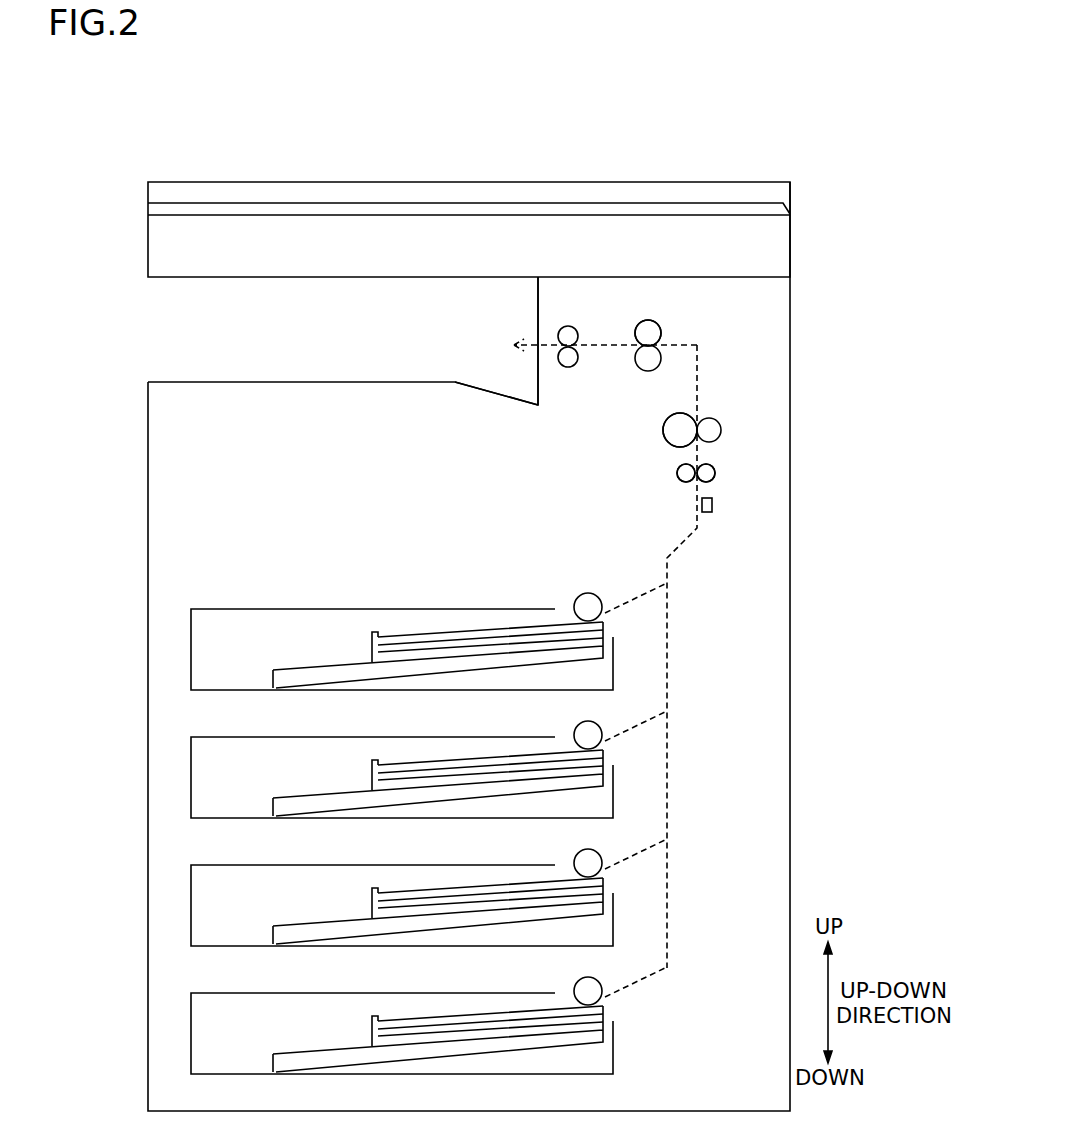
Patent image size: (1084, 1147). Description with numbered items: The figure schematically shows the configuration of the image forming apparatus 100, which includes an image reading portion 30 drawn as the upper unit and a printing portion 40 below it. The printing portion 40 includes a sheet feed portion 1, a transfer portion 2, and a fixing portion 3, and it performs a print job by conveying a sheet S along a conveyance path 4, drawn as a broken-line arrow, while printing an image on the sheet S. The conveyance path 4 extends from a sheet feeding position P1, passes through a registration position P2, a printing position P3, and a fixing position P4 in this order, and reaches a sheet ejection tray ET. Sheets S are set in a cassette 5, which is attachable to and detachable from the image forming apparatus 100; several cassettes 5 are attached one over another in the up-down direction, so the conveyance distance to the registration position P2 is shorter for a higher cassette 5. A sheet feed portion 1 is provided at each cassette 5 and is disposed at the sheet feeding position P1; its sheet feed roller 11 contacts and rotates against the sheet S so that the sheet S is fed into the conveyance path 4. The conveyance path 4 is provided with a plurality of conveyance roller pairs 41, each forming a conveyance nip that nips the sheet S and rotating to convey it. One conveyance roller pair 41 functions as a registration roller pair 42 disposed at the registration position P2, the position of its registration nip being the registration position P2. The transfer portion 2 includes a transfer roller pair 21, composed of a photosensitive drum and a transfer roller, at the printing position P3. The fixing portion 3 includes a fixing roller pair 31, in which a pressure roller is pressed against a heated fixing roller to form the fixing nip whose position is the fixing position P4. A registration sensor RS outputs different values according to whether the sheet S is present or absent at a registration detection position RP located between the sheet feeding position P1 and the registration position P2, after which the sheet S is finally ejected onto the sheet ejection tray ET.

The image forming apparatus 100 is at (200, 168).
The image reading portion 30 is at (795, 248).
The printing portion 40 is at (795, 345).
The conveyance roller pair 41 is at (568, 366).
The registration roller pair 42 is at (727, 486).
The fixing portion 3 is at (632, 325).
The fixing roller pair 31 is at (647, 320).
The transfer portion 2 is at (657, 409).
The transfer roller pair 21 is at (667, 432).
The conveyance path 4 is at (686, 543).
The cassette 5 is at (213, 609).
The sheet feed portion 1 is at (532, 597).
The sheet feed roller 11 is at (588, 593).
The sheet S is at (378, 630).
The sheet feeding position P1 is at (609, 621).
The registration position P2 is at (692, 488).
The printing position P3 is at (701, 414).
The fixing position P4 is at (668, 343).
The registration detection position RP is at (690, 514).
The registration sensor RS is at (713, 509).
The sheet ejection tray ET is at (425, 380).